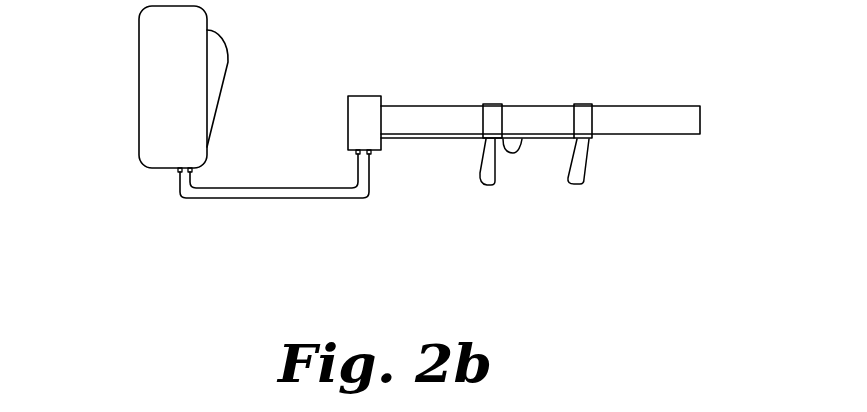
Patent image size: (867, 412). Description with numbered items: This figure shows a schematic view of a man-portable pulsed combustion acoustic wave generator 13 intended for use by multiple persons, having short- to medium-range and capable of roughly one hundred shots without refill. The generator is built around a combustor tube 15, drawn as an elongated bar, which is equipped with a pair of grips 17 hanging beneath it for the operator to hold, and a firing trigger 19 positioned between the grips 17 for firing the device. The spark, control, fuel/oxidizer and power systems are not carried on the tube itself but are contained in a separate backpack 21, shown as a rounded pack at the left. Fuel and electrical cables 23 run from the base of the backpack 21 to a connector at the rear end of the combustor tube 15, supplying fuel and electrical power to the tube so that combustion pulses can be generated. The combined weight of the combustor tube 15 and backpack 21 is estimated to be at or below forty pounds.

The pulsed combustion acoustic wave generator 13 is at (558, 124).
The combustor tube 15 is at (673, 128).
The grips 17 is at (484, 178).
The firing trigger 19 is at (520, 147).
The backpack 21 is at (148, 49).
The fuel and electrical cables 23 is at (277, 199).